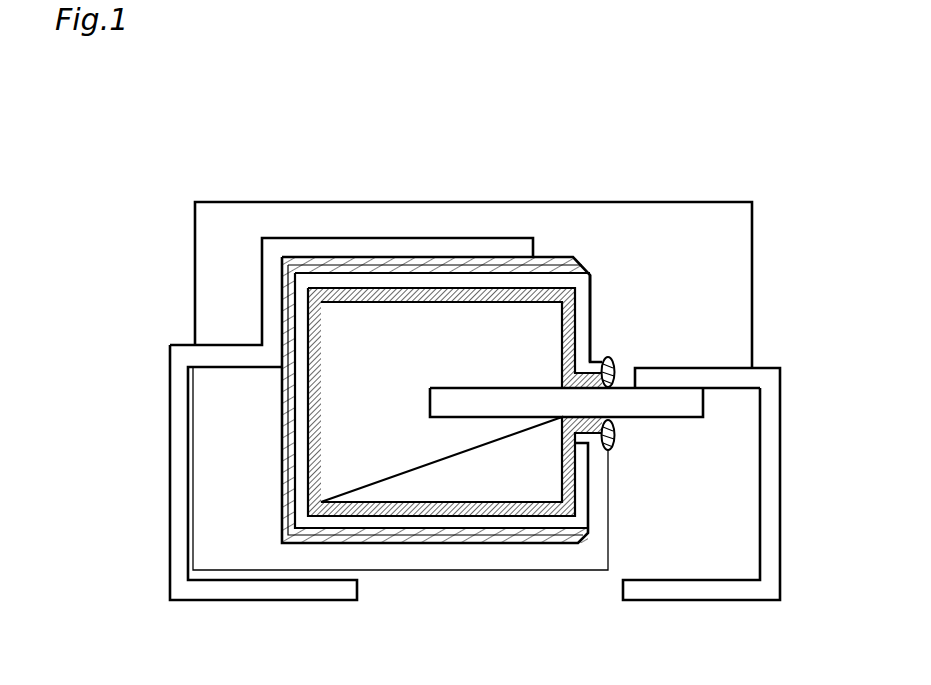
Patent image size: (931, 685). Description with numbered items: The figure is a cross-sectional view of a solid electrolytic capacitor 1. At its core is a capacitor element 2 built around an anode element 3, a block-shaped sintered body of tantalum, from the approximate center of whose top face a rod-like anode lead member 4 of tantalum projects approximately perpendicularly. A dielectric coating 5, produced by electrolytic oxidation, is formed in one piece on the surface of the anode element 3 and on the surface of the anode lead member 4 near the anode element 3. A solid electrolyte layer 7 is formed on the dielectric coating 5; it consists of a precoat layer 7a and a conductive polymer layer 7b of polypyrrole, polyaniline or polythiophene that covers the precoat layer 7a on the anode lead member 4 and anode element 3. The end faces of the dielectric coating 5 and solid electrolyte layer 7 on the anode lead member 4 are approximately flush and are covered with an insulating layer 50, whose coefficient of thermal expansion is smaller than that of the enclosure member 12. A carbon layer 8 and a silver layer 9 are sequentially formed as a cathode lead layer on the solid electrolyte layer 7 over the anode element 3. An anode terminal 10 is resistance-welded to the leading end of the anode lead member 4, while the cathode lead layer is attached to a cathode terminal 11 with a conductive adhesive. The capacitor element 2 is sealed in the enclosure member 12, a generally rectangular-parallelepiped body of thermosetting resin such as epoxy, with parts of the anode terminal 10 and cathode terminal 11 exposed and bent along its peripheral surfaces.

The solid electrolytic capacitor 1 is at (233, 119).
The capacitor element 2 is at (603, 274).
The anode element 3 is at (417, 322).
The anode lead member 4 is at (626, 378).
The dielectric coating 5 is at (390, 518).
The solid electrolyte layer 7 is at (448, 475).
The precoat layer 7a is at (452, 518).
The conductive polymer layer 7b is at (497, 525).
The carbon layer 8 is at (532, 545).
The silver layer 9 is at (577, 537).
The anode terminal 10 is at (773, 527).
The cathode terminal 11 is at (177, 513).
The enclosure member 12 is at (198, 253).
The insulating layer 50 is at (615, 355).